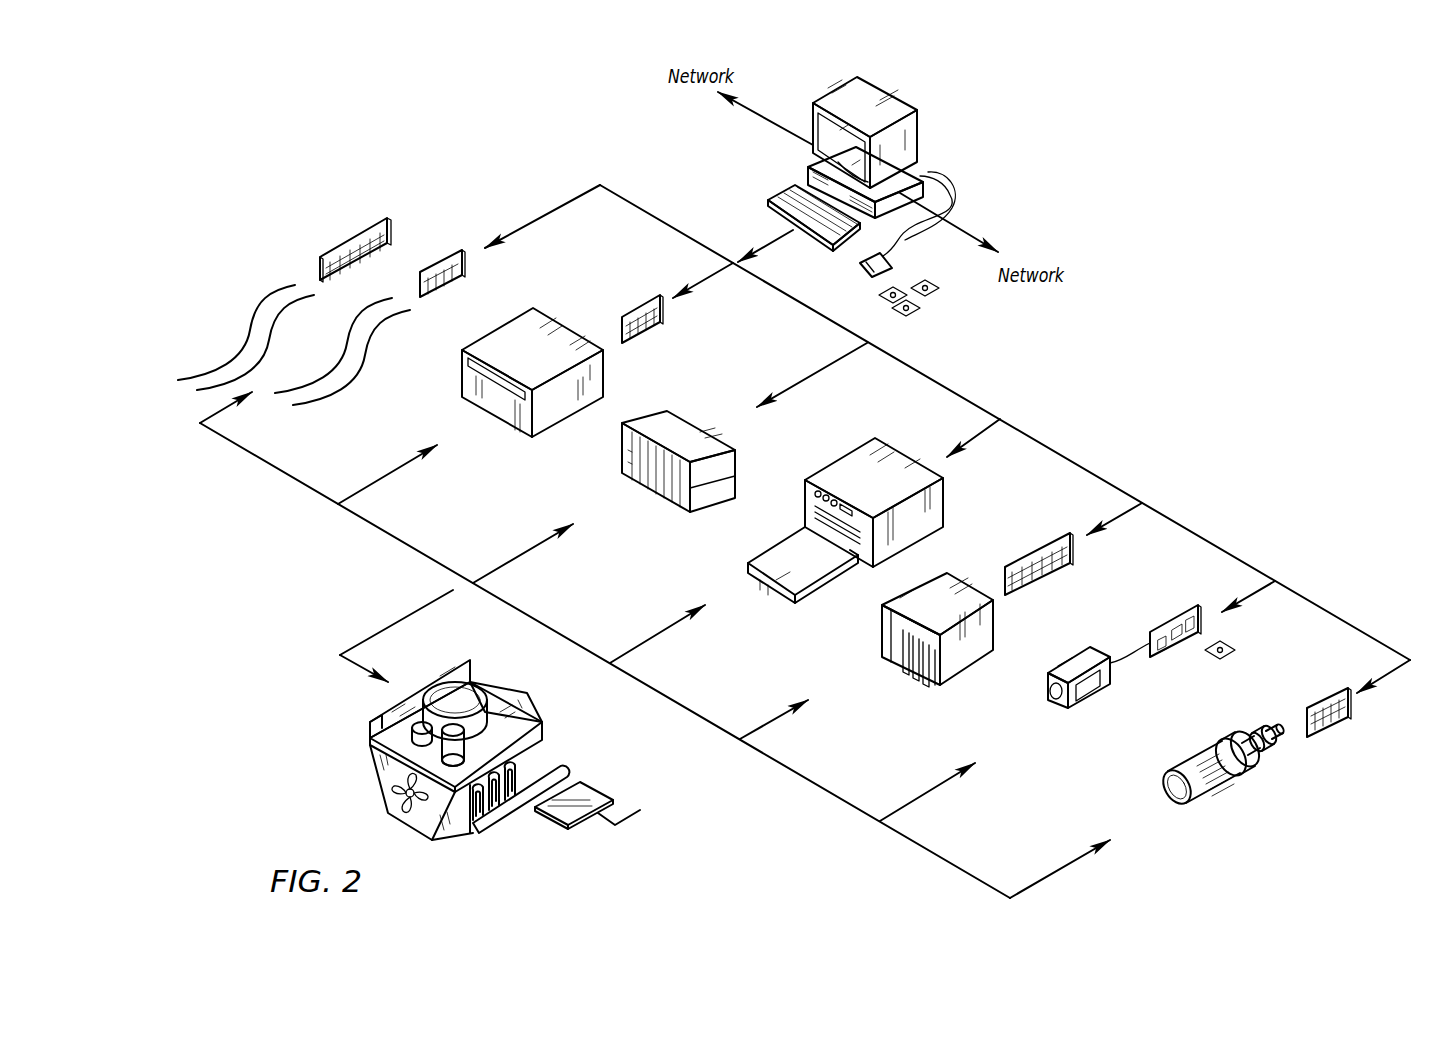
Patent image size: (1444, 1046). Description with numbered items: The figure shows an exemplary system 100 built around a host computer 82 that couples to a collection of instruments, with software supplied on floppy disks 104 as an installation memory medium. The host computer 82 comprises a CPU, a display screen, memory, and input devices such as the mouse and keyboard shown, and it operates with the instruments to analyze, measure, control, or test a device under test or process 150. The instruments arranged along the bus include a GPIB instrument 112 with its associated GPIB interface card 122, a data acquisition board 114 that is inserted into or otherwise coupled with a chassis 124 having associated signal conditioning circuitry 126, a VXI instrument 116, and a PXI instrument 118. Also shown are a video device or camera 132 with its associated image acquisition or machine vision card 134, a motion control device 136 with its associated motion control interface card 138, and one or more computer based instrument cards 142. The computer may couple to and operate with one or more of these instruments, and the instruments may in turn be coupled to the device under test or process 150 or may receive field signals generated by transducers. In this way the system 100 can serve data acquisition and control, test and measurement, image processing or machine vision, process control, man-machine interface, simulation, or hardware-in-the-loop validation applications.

The host computer 82 is at (885, 98).
The system 100 is at (1157, 223).
The floppy disks 104 is at (913, 310).
The GPIB instrument 112 is at (488, 335).
The data acquisition board 114 is at (1027, 583).
The VXI instrument 116 is at (845, 463).
The PXI instrument 118 is at (655, 497).
The GPIB interface card 122 is at (633, 310).
The chassis 124 is at (892, 638).
The signal conditioning circuitry 126 is at (908, 662).
The video device or camera 132 is at (1092, 697).
The image acquisition card 134 is at (1165, 620).
The motion control device 136 is at (1217, 793).
The motion control interface card 138 is at (1330, 725).
The computer based instrument cards 142 is at (335, 243).
The device under test or process 150 is at (385, 775).